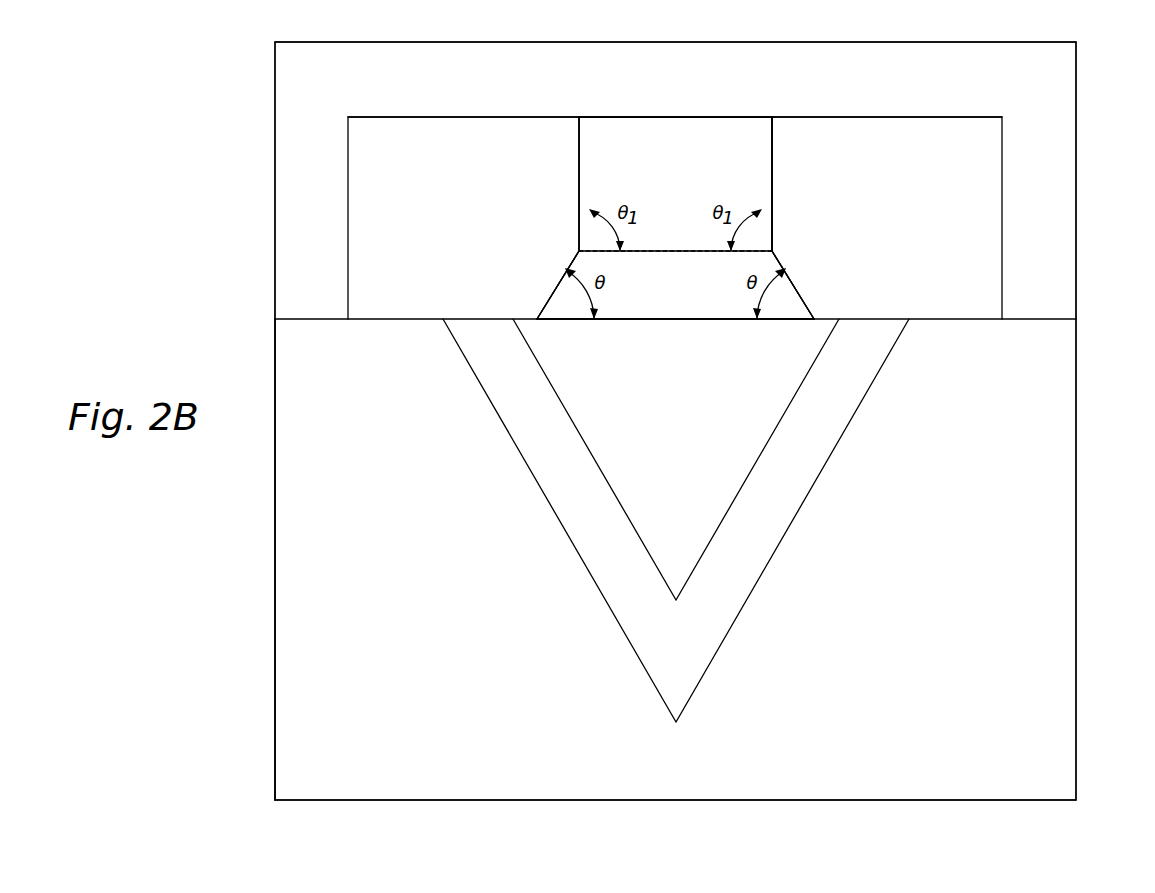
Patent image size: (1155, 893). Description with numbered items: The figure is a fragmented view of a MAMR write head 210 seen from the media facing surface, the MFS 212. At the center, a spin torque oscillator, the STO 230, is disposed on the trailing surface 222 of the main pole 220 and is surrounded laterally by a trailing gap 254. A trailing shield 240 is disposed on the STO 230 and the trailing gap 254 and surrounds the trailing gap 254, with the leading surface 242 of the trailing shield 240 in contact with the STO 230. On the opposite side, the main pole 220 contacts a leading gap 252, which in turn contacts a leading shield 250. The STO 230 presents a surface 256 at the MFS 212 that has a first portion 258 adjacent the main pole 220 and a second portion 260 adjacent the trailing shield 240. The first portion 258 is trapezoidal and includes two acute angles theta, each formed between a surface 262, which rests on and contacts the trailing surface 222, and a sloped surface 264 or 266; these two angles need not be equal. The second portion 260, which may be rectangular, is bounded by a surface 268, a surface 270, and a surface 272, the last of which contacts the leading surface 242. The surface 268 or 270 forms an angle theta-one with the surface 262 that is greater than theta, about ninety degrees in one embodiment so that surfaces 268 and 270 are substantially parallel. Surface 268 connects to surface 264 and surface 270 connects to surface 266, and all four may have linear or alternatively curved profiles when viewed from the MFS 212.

The write head 210 is at (195, 102).
The MFS 212 is at (275, 540).
The main pole 220 is at (661, 418).
The trailing surface 222 is at (665, 321).
The STO 230 is at (577, 186).
The trailing shield 240 is at (1067, 197).
The leading surface 242 is at (669, 115).
The leading shield 250 is at (1067, 538).
The leading gap 252 is at (816, 474).
The trailing gap 254 is at (897, 221).
The surface 256 is at (753, 180).
The first portion 258 is at (664, 283).
The second portion 260 is at (664, 181).
The surface 262 is at (627, 318).
The surface 264 is at (794, 290).
The surface 266 is at (560, 284).
The surface 268 is at (775, 148).
The surface 270 is at (578, 148).
The surface 272 is at (737, 118).